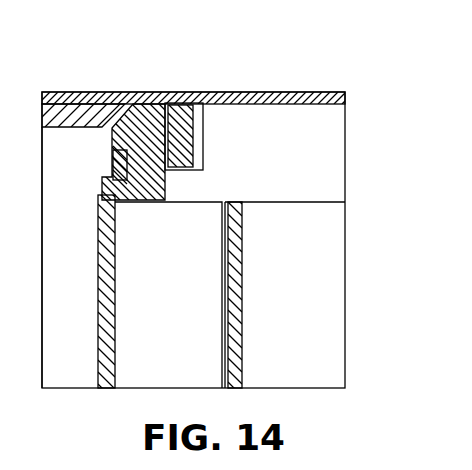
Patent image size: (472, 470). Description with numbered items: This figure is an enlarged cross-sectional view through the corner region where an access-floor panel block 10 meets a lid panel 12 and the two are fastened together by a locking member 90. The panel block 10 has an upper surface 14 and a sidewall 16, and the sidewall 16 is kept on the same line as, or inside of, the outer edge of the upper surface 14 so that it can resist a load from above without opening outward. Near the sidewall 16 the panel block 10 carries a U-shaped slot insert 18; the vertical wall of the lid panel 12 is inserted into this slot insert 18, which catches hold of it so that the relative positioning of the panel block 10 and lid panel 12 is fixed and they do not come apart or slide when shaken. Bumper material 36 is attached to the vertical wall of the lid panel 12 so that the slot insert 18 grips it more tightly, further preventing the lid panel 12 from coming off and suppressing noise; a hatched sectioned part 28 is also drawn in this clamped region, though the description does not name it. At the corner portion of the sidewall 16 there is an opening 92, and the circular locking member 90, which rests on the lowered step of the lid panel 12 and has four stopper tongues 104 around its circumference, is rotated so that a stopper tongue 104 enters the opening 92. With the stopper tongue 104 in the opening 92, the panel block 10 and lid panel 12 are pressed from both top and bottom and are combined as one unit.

The panel block 10 is at (285, 82).
The upper surface 14 is at (313, 92).
The locking member 90 is at (62, 92).
The gasket 28 is at (97, 103).
The stopper tongue 104 is at (186, 112).
The bumper material 36 is at (108, 176).
The lid panel 12 is at (62, 128).
The sidewall 16 is at (101, 313).
The slot insert 18 is at (138, 202).
The opening 92 is at (197, 185).